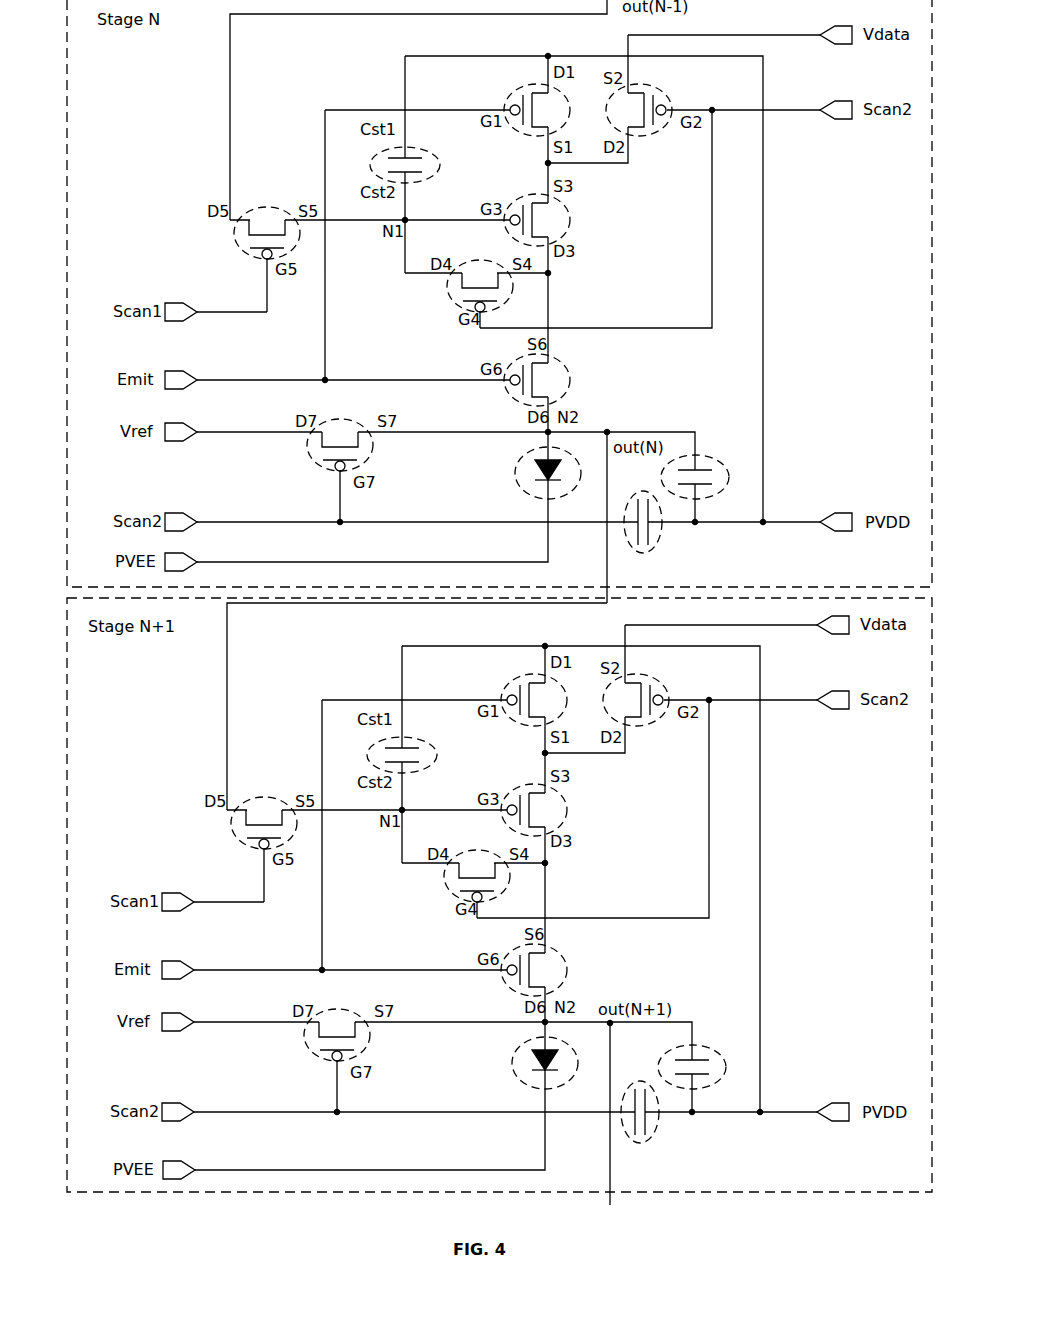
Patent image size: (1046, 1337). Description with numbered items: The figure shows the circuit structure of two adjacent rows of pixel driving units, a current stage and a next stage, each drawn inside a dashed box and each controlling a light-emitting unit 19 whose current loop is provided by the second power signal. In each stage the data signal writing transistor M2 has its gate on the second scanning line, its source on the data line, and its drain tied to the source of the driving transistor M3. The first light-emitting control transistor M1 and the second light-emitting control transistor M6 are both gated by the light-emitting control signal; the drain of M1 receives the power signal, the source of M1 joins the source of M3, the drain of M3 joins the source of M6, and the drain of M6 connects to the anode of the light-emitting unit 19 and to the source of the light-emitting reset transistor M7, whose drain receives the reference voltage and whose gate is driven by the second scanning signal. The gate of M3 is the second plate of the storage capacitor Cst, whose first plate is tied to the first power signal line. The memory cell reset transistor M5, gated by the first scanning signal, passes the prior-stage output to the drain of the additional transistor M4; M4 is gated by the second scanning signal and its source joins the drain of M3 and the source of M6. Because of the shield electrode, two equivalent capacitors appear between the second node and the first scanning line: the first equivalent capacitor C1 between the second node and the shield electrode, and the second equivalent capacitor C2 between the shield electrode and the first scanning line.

The first light-emitting control transistor M1 is at (509, 399).
The data signal writing transistor M2 is at (666, 400).
The driving transistor M3 is at (564, 513).
The additional transistor M4 is at (459, 589).
The memory cell reset transistor M5 is at (238, 528).
The second light-emitting control transistor M6 is at (556, 669).
The light-emitting reset transistor M7 is at (321, 749).
The storage capacitor Cst is at (422, 455).
The first equivalent capacitor C1 is at (704, 757).
The second equivalent capacitor C2 is at (659, 827).
The light-emitting unit 19 is at (528, 772).